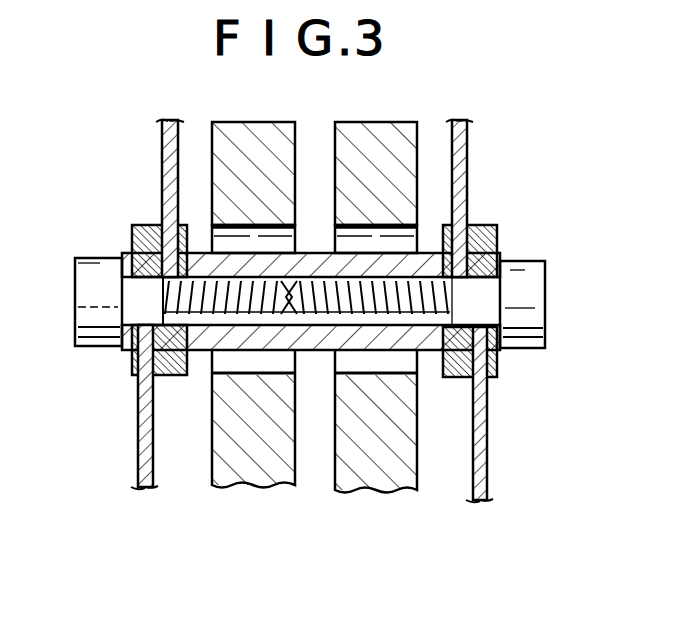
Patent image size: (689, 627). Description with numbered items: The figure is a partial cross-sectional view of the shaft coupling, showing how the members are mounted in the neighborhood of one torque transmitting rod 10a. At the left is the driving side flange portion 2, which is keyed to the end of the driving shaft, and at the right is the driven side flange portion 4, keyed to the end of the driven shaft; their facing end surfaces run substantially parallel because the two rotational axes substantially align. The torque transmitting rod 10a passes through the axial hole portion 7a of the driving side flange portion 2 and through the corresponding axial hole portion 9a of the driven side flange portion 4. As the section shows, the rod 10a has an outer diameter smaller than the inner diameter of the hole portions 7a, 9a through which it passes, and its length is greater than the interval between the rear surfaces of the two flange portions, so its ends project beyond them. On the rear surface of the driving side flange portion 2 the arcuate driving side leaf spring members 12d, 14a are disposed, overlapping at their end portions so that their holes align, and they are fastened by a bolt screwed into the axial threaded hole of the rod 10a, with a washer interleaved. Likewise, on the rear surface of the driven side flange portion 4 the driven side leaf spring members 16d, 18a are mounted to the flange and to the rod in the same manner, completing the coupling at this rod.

The driving side flange portion 2 is at (255, 470).
The driven side flange portion 4 is at (387, 478).
The axial hole portion 7a is at (230, 228).
The axial hole portion 9a is at (417, 225).
The torque transmitting rod 10a is at (397, 352).
The driving side leaf spring member 12d is at (163, 151).
The driving side leaf spring member 14a is at (140, 447).
The driven side leaf spring member 16d is at (462, 182).
The driven side leaf spring member 18a is at (487, 460).